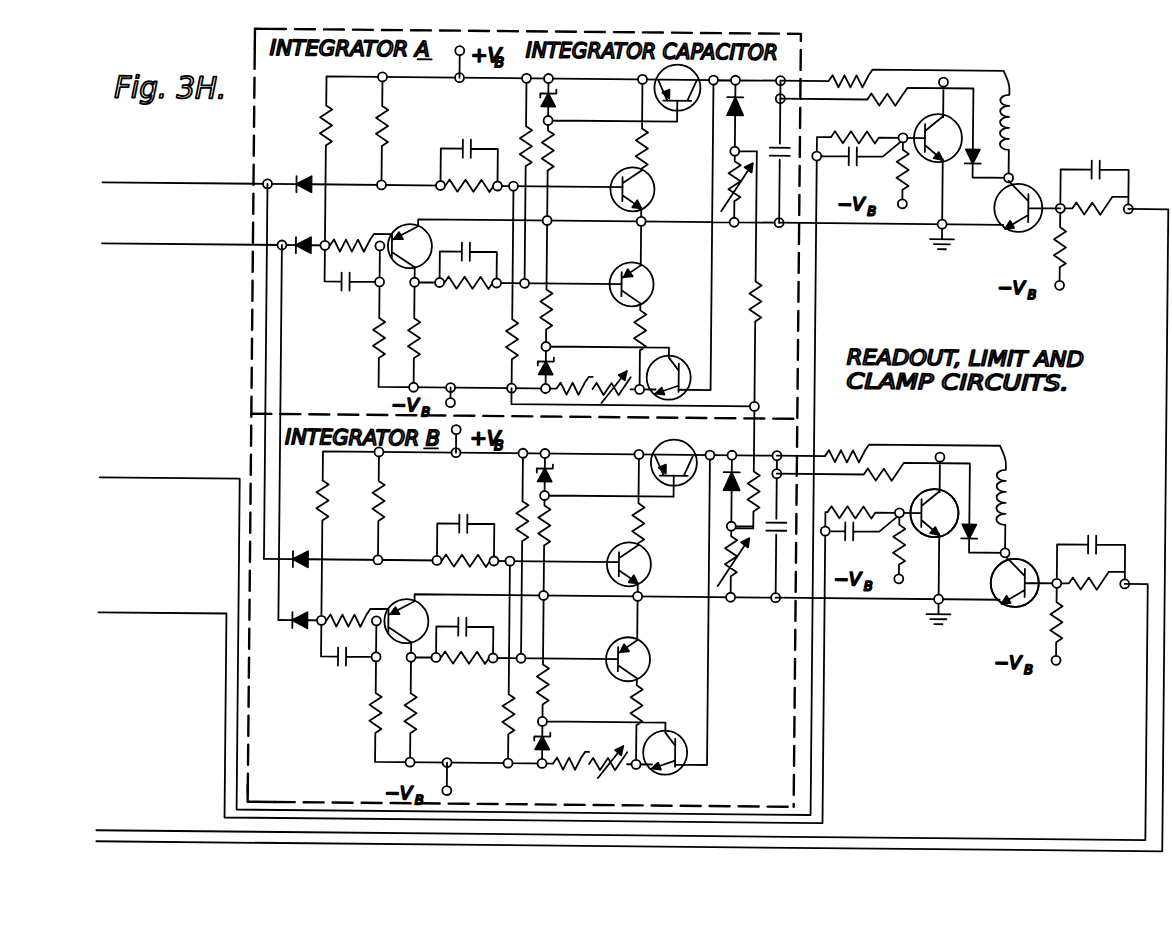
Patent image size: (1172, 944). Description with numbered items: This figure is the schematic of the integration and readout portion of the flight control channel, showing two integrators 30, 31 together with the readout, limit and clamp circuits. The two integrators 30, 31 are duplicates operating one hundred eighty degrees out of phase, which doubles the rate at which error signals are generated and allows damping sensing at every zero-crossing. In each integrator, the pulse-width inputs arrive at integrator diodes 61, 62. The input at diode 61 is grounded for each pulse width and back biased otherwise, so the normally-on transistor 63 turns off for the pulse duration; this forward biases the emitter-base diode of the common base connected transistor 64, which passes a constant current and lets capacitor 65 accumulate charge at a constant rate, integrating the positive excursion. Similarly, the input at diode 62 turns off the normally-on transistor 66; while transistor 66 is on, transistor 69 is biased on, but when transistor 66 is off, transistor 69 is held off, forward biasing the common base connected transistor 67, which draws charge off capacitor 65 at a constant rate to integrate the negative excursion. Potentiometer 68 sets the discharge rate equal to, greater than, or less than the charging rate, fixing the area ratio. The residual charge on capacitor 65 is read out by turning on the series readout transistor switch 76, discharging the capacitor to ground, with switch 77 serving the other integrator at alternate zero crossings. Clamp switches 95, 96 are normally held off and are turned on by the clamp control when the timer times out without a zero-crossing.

The integrator 30 is at (251, 54).
The integrator 31 is at (276, 806).
The integrator diode 61 is at (300, 178).
The integrator diode 62 is at (302, 258).
The transistor 63 is at (652, 192).
The common base connected transistor 64 is at (687, 108).
The capacitor 65 is at (787, 66).
The transistor 66 is at (400, 232).
The common base connected transistor 67 is at (681, 357).
The potentiometer 68 is at (604, 383).
The transistor 69 is at (651, 276).
The clamp switch 95 is at (926, 162).
The clamp switch 96 is at (926, 537).
The readout transistor switch 76 is at (991, 209).
The readout transistor switch 77 is at (991, 584).